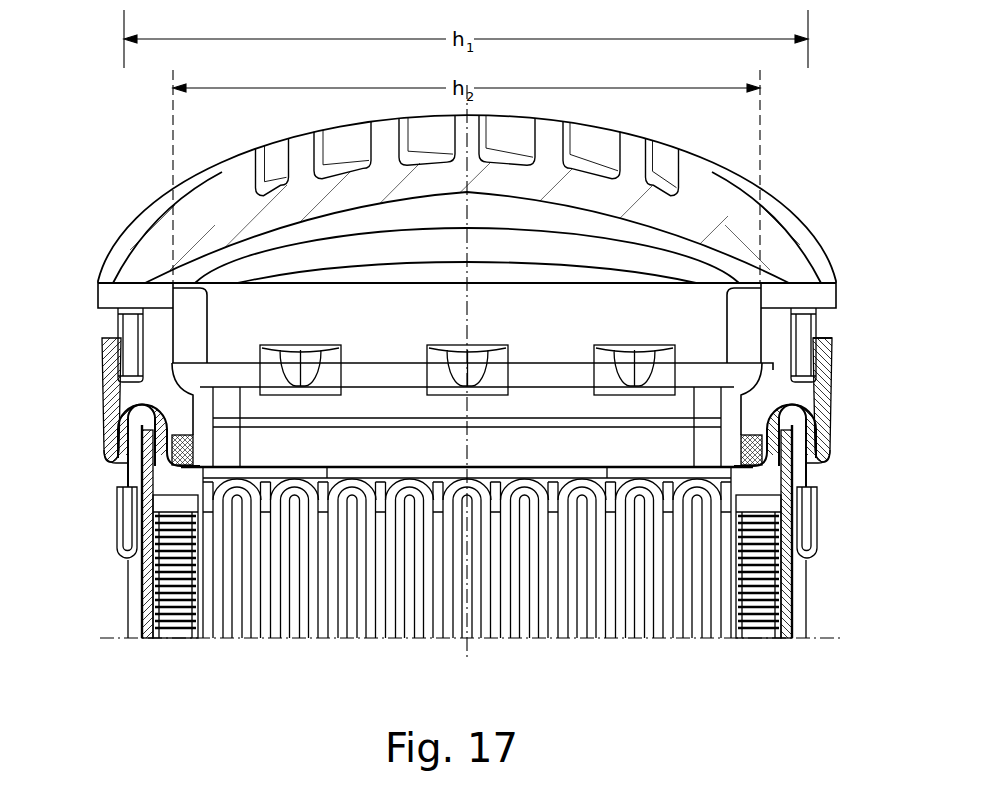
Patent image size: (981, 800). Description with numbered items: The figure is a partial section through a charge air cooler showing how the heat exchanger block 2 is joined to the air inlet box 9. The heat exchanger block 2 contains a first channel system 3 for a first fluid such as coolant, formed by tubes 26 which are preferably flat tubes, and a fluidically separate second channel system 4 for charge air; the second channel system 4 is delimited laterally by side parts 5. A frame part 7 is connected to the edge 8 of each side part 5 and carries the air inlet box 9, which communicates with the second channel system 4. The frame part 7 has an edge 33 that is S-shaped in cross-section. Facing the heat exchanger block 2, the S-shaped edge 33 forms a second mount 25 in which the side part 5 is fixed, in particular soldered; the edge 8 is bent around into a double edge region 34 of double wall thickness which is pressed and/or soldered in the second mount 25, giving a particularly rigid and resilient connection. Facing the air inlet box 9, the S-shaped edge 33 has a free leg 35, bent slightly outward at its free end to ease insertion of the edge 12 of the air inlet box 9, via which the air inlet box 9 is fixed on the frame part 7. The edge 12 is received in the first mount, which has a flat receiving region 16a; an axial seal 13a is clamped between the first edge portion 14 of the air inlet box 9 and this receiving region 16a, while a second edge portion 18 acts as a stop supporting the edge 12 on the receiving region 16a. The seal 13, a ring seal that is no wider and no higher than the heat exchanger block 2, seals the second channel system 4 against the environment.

The heat exchanger block 2 is at (257, 643).
The first channel system 3 is at (495, 628).
The tubes 26 is at (467, 493).
The second channel system 4 is at (648, 628).
The side parts 5 is at (807, 600).
The frame part 7 is at (840, 440).
The edge 8 is at (800, 522).
The air inlet box 9 is at (690, 186).
The edge 12 is at (815, 313).
The seal 13 is at (753, 452).
The axial seal 13a is at (187, 443).
The first edge portion 14 is at (806, 392).
The receiving region 16a is at (162, 458).
The second edge portion 18 is at (778, 348).
The second mount 25 is at (120, 433).
The S-shaped edge 33 is at (96, 396).
The double edge region 34 is at (133, 481).
The free leg 35 is at (827, 347).